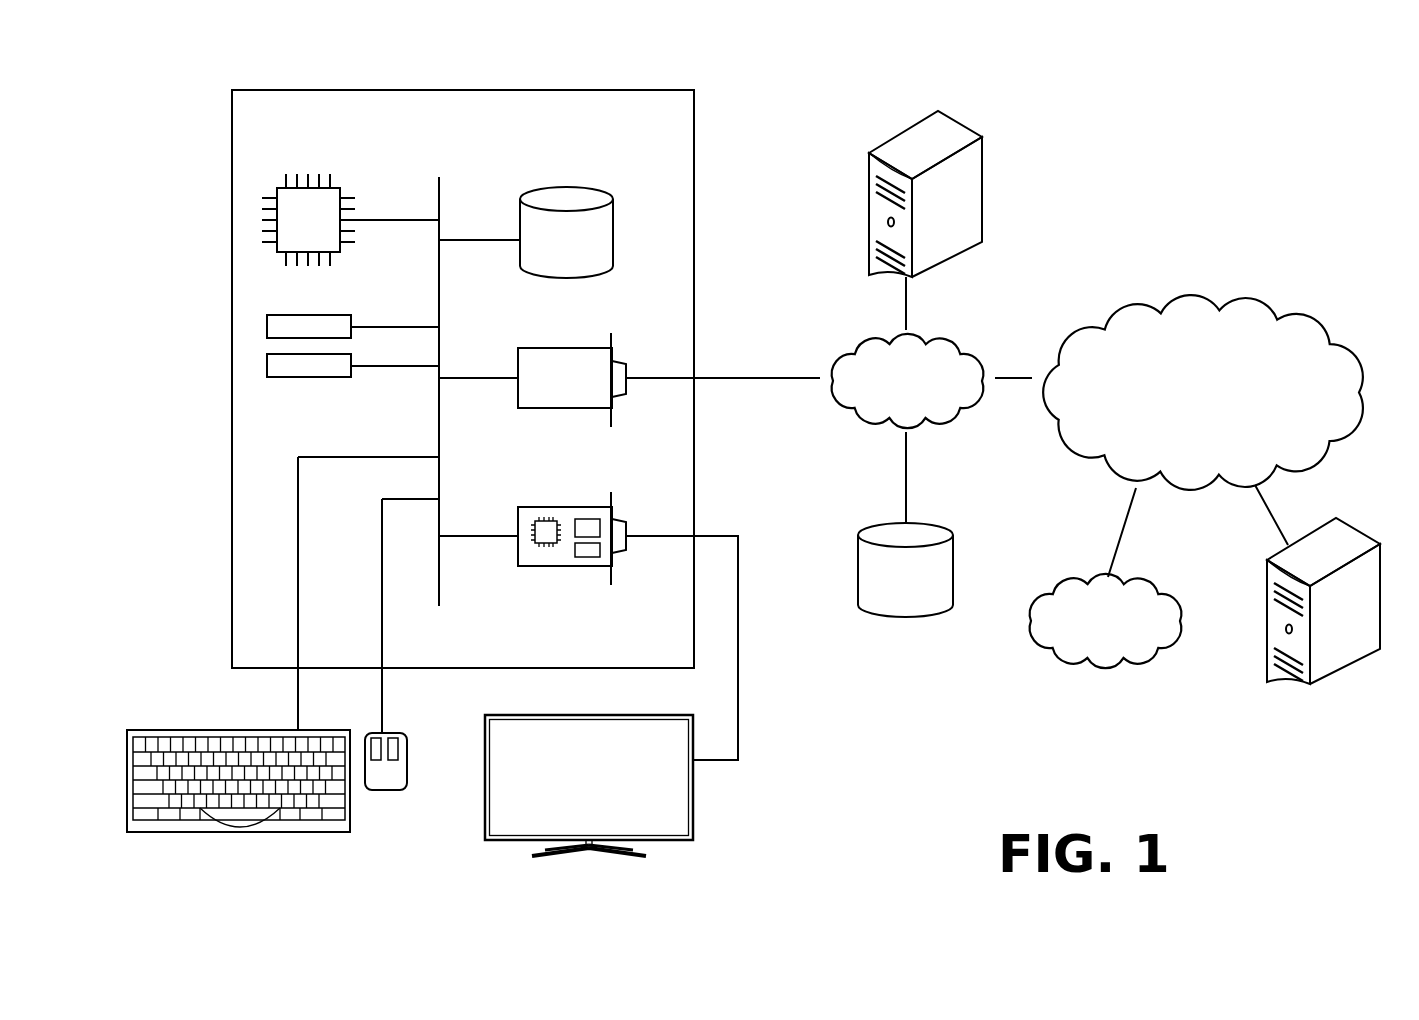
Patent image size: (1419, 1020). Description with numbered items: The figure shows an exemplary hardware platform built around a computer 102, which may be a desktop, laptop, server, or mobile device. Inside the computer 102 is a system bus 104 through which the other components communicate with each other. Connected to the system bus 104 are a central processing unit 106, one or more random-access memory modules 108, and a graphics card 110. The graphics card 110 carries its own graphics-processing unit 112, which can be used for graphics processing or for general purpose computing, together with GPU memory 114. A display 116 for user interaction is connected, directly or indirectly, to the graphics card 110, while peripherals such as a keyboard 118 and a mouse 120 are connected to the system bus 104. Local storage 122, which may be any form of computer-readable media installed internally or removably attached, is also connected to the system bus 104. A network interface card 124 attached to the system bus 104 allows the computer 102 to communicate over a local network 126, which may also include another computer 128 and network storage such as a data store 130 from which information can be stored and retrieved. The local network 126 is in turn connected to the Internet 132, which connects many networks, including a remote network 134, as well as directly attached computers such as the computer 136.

The computer 102 is at (643, 90).
The system bus 104 is at (441, 182).
The central processing unit 106 is at (333, 188).
The random-access memory modules 108 is at (352, 358).
The graphics card 110 is at (518, 518).
The graphics-processing unit 112 is at (546, 537).
The GPU memory 114 is at (587, 553).
The display 116 is at (693, 817).
The keyboard 118 is at (240, 834).
The mouse 120 is at (382, 790).
The local storage 122 is at (614, 222).
The network interface card 124 is at (518, 353).
The local network 126 is at (965, 331).
The computer 128 is at (965, 123).
The data store 130 is at (944, 523).
The Internet 132 is at (1255, 292).
The remote network 134 is at (1165, 574).
The computer 136 is at (1357, 526).